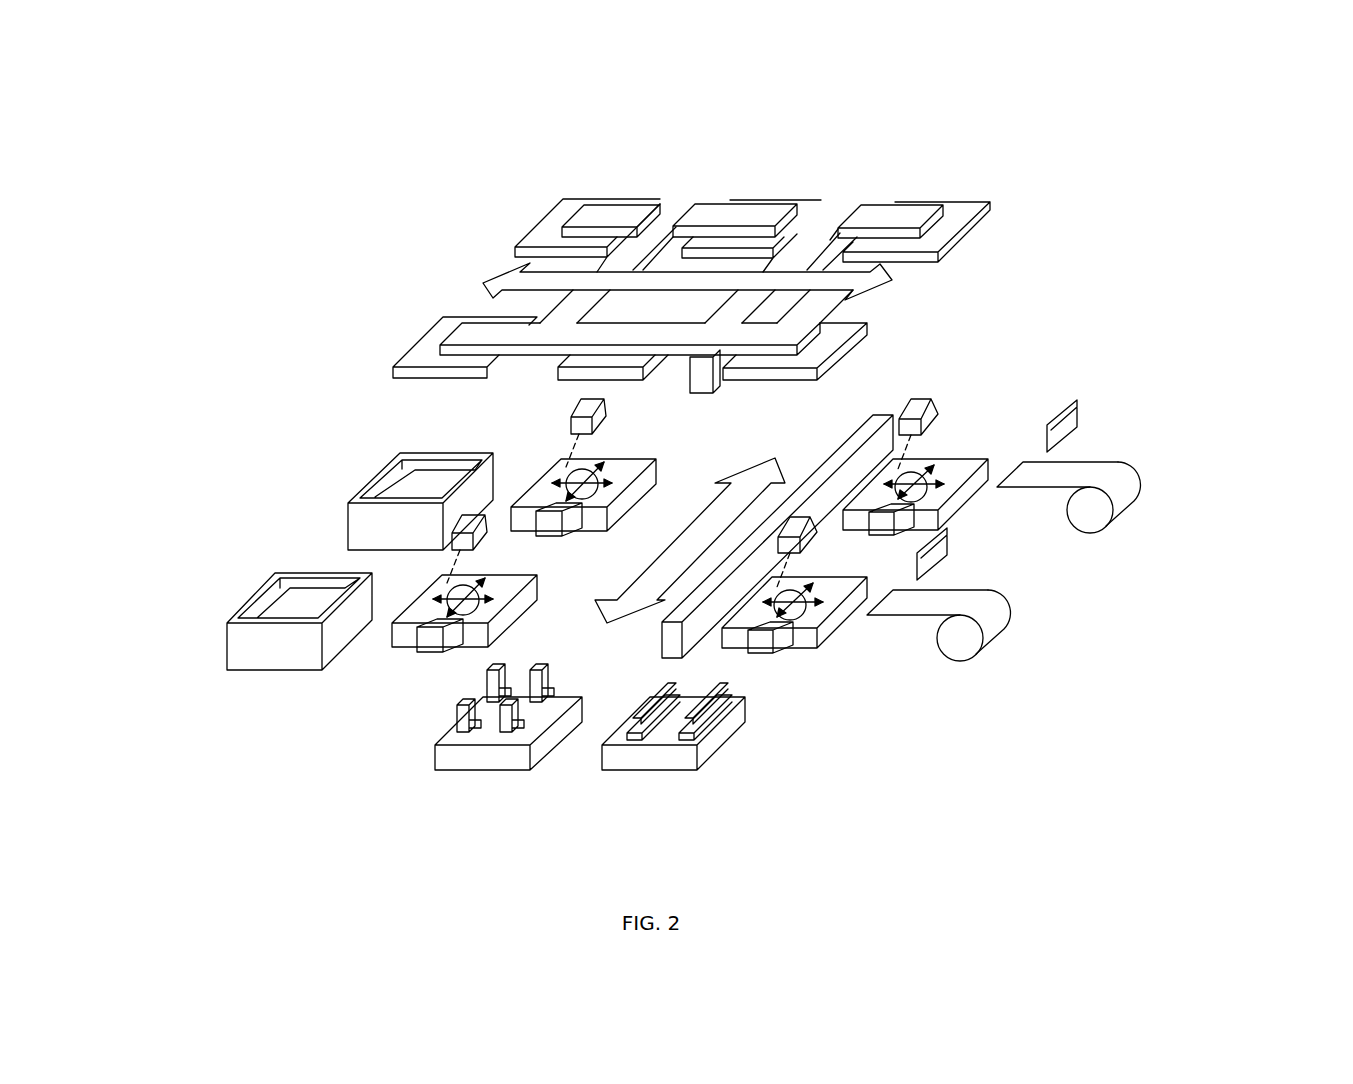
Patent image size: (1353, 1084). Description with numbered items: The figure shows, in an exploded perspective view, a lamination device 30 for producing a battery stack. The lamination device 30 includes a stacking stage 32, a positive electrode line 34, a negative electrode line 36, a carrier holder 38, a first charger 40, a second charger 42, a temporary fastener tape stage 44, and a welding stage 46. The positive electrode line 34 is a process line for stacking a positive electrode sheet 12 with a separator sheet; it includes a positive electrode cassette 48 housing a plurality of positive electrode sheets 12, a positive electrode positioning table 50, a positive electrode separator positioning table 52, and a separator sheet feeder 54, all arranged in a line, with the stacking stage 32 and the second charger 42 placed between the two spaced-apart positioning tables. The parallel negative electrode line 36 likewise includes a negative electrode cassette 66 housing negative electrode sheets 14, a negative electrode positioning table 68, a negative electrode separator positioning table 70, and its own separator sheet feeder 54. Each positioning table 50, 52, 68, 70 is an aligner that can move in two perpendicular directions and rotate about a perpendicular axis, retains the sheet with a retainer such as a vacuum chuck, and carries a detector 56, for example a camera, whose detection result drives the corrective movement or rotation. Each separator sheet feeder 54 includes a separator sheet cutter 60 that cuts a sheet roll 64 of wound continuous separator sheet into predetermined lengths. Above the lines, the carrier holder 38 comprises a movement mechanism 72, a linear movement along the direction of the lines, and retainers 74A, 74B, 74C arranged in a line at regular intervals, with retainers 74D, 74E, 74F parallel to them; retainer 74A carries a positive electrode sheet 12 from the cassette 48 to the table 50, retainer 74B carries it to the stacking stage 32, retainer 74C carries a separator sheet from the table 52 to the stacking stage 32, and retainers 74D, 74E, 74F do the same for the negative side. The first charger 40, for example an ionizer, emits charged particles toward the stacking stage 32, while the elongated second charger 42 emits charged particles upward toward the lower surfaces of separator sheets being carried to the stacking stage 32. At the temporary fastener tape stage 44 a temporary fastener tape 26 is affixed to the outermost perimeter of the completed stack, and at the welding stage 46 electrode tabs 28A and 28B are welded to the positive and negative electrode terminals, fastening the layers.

The positive electrode sheet 12 is at (293, 603).
The negative electrode sheet 14 is at (437, 480).
The temporary fastener tape 26 is at (465, 703).
The electrode tab 28A is at (620, 715).
The electrode tab 28B is at (713, 720).
The lamination device 30 is at (274, 161).
The stacking stage 32 is at (678, 523).
The positive electrode line 34 is at (210, 572).
The negative electrode line 36 is at (330, 438).
The carrier holder 38 is at (826, 158).
The first charger 40 is at (708, 380).
The second charger 42 is at (670, 643).
The temporary fastener tape stage 44 is at (487, 760).
The welding stage 46 is at (653, 760).
The positive electrode cassette 48 is at (270, 655).
The positive electrode positioning table 50 is at (517, 605).
The positive electrode separator positioning table 52 is at (842, 613).
The separator sheet feeder 54 is at (1215, 398).
The detector 56 is at (481, 533).
The separator sheet cutter 60 is at (1077, 418).
The sheet roll 64 is at (1083, 477).
The negative electrode cassette 66 is at (430, 485).
The negative electrode positioning table 68 is at (618, 470).
The negative electrode separator positioning table 70 is at (963, 463).
The movement mechanism 72 is at (632, 218).
The retainer 74A is at (428, 343).
The retainer 74B is at (640, 360).
The retainer 74C is at (840, 342).
The retainer 74D is at (565, 210).
The retainer 74E is at (737, 243).
The retainer 74F is at (955, 208).